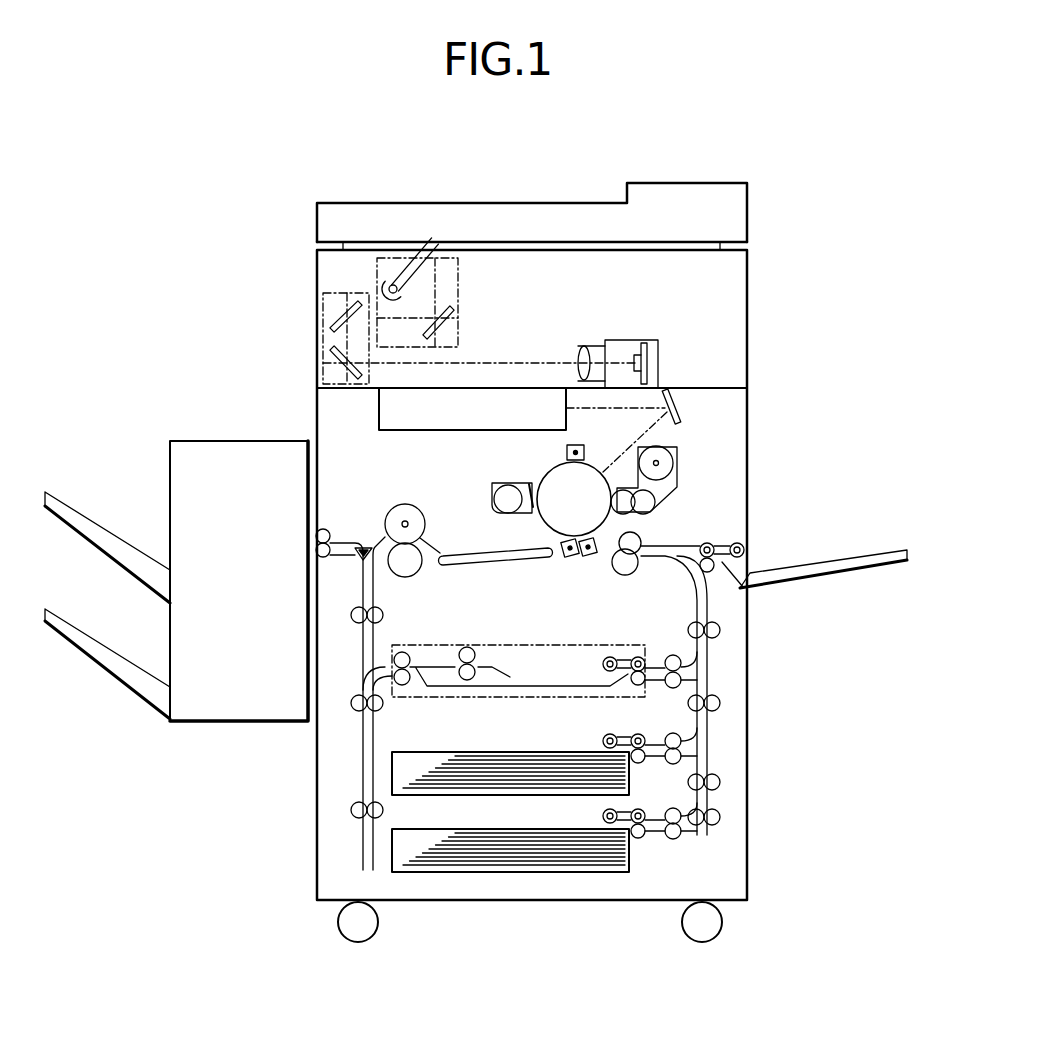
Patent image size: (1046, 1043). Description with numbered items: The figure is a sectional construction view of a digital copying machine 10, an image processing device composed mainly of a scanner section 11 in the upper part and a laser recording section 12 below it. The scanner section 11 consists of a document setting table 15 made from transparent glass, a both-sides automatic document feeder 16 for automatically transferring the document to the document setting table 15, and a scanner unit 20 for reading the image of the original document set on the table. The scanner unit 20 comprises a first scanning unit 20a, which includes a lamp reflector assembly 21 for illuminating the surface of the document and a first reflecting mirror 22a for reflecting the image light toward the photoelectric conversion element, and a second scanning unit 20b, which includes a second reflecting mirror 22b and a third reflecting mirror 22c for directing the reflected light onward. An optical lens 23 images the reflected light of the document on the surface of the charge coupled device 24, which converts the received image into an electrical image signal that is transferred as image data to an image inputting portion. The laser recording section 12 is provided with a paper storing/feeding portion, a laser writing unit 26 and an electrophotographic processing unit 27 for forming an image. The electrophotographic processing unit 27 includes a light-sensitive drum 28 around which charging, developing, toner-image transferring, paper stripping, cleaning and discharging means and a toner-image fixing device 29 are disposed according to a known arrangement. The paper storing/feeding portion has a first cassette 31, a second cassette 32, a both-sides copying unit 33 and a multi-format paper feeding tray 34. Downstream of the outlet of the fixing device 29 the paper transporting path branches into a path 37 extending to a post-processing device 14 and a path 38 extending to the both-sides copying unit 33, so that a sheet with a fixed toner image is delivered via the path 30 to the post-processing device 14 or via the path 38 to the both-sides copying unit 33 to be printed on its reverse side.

The digital copying machine 10 is at (790, 385).
The scanner section 11 is at (749, 308).
The laser recording section 12 is at (749, 497).
The post-processing device 14 is at (235, 455).
The document setting table 15 is at (486, 243).
The both-sides automatic document feeder 16 is at (576, 212).
The scanner unit 20 is at (350, 277).
The first scanning unit 20a is at (458, 347).
The second scanning unit 20b is at (369, 370).
The lamp reflector assembly 21 is at (410, 279).
The first reflecting mirror 22a is at (453, 322).
The second reflecting mirror 22b is at (338, 318).
The third reflecting mirror 22c is at (333, 357).
The optical lens 23 is at (585, 347).
The charge coupled device 24 is at (633, 357).
The laser writing unit 26 is at (455, 431).
The electrophotographic processing unit 27 is at (700, 446).
The light-sensitive drum 28 is at (548, 478).
The toner-image fixing device 29 is at (419, 512).
The path 30 is at (346, 538).
The first cassette 31 is at (505, 757).
The second cassette 32 is at (505, 834).
The both-sides copying unit 33 is at (470, 644).
The multi-format paper feeding tray 34 is at (822, 564).
The path 37 is at (316, 540).
The path 38 is at (379, 551).